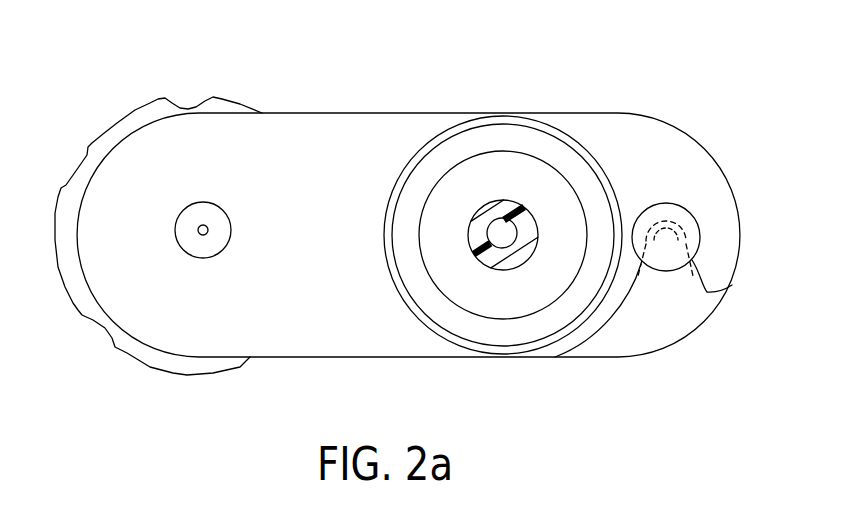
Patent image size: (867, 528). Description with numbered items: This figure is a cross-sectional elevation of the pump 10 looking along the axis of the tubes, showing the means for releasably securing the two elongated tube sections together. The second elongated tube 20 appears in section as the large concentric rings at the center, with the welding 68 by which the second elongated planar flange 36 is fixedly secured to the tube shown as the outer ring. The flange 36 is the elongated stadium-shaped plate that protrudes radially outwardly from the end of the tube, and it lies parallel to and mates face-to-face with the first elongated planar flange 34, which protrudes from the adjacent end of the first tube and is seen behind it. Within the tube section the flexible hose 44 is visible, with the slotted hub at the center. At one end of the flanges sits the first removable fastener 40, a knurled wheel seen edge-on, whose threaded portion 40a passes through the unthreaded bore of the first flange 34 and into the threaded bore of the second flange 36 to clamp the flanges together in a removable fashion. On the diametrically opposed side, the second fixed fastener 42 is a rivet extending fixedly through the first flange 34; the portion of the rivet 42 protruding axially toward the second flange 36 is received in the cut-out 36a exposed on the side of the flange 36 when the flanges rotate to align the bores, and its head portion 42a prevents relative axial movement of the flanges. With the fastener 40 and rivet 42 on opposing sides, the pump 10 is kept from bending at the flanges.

The pump 10 is at (751, 133).
The second elongated tube 20 is at (499, 145).
The first elongated planar flange 34 is at (646, 340).
The second elongated planar flange 36 is at (334, 180).
The cut-out 36a is at (706, 291).
The first removable fastener 40 is at (136, 102).
The threaded portion 40a is at (186, 243).
The second fixed fastener 42 is at (669, 247).
The head portion 42a is at (698, 219).
The flexible hose 44 is at (522, 205).
The welding 68 is at (425, 142).